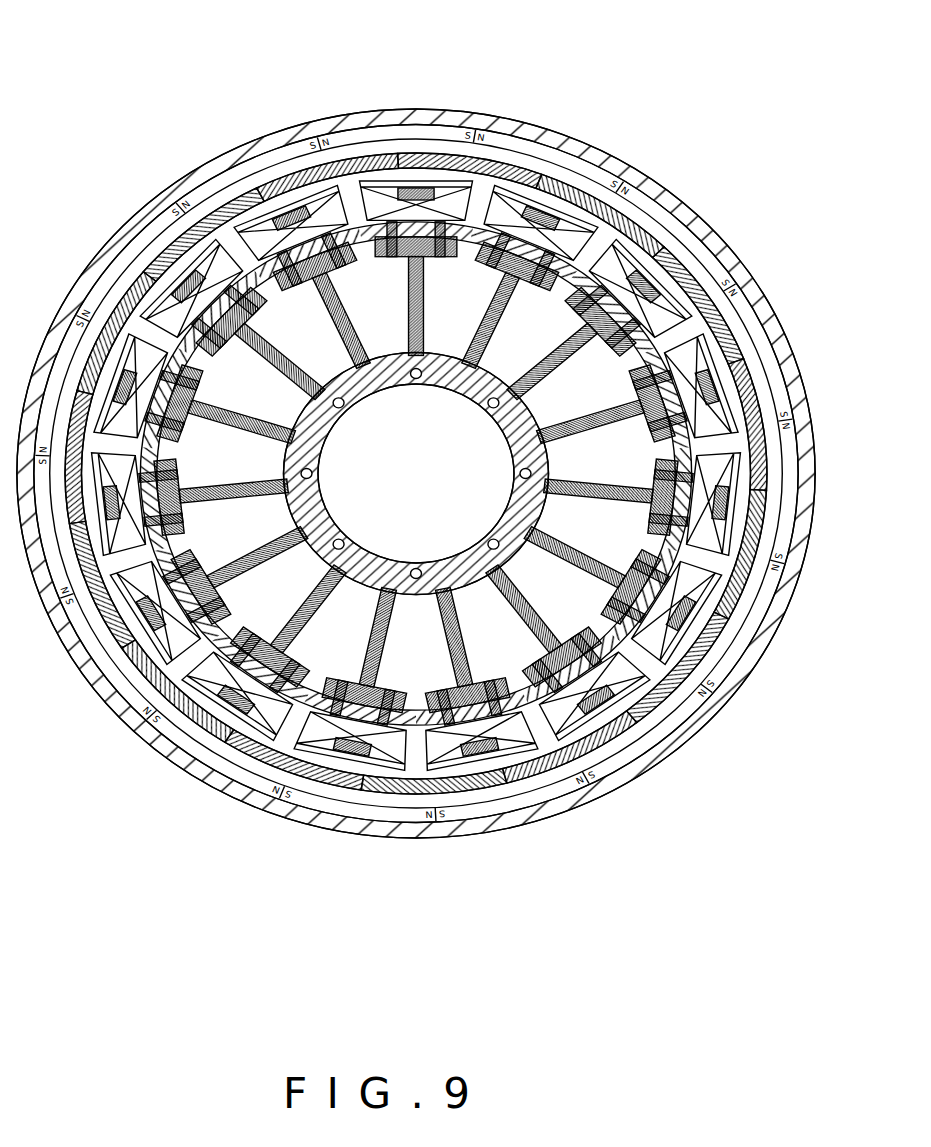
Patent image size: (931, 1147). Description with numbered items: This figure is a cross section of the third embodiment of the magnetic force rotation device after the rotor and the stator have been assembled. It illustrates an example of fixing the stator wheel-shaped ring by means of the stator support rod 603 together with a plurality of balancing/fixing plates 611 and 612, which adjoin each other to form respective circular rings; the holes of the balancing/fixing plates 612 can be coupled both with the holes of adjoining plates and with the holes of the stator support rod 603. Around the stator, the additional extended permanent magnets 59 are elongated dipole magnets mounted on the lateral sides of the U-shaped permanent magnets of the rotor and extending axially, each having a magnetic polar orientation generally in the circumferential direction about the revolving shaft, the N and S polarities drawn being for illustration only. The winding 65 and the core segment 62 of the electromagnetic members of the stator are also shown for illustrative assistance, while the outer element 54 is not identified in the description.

The housing 54 is at (550, 137).
The additional extended permanent magnet 59 is at (518, 147).
The balancing/fixing plate 611 is at (495, 163).
The balancing/fixing plate 612 is at (258, 253).
The core segment 62 is at (415, 193).
The winding 65 is at (324, 200).
The stator support rod 603 is at (217, 296).